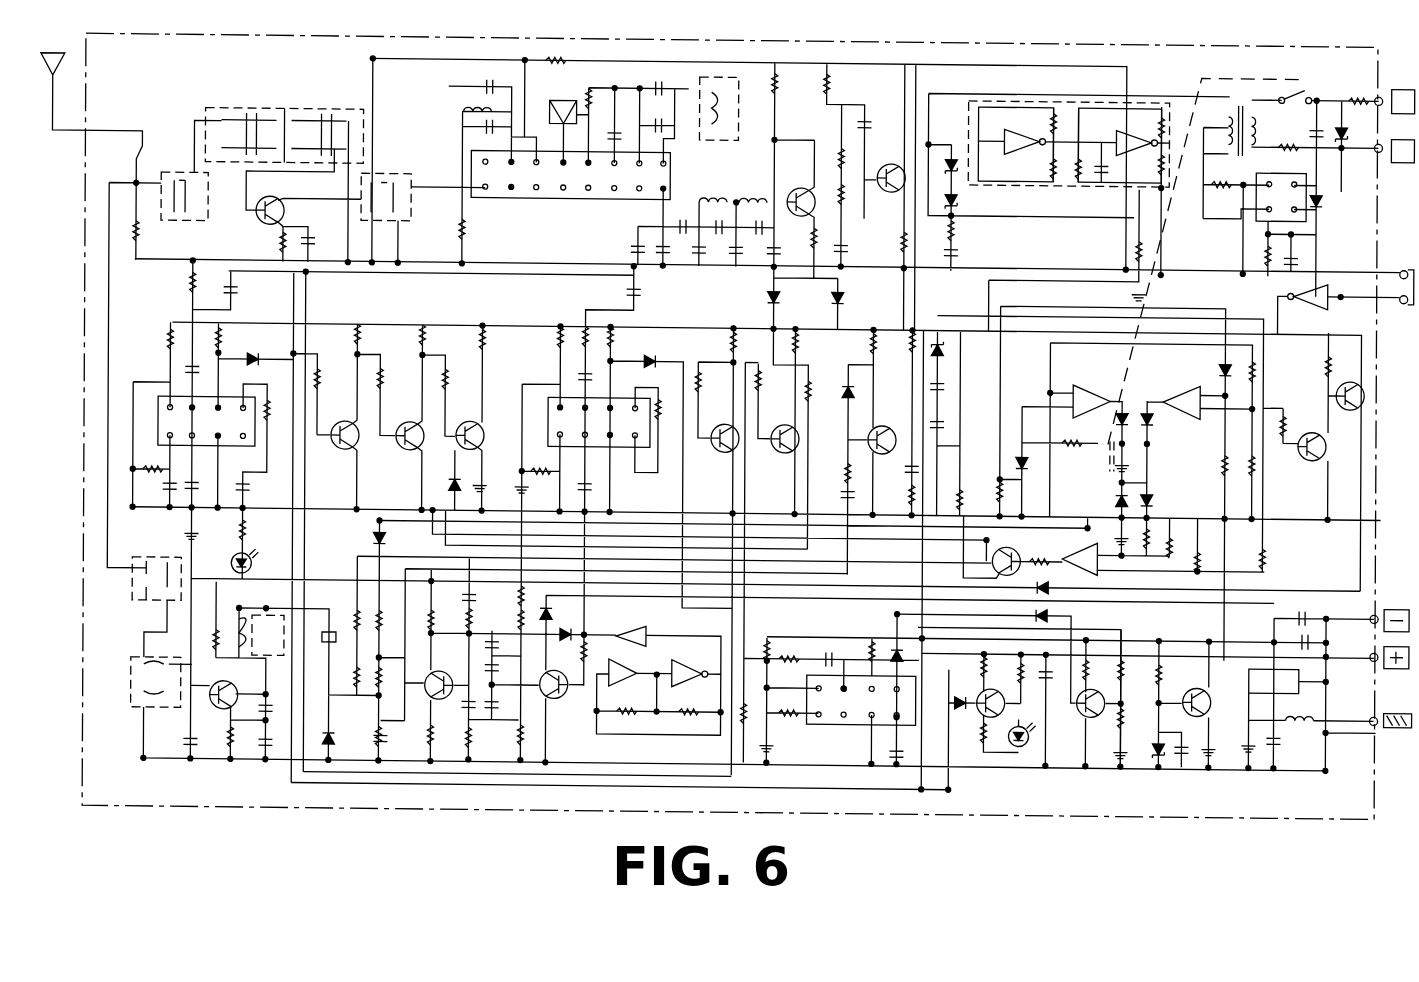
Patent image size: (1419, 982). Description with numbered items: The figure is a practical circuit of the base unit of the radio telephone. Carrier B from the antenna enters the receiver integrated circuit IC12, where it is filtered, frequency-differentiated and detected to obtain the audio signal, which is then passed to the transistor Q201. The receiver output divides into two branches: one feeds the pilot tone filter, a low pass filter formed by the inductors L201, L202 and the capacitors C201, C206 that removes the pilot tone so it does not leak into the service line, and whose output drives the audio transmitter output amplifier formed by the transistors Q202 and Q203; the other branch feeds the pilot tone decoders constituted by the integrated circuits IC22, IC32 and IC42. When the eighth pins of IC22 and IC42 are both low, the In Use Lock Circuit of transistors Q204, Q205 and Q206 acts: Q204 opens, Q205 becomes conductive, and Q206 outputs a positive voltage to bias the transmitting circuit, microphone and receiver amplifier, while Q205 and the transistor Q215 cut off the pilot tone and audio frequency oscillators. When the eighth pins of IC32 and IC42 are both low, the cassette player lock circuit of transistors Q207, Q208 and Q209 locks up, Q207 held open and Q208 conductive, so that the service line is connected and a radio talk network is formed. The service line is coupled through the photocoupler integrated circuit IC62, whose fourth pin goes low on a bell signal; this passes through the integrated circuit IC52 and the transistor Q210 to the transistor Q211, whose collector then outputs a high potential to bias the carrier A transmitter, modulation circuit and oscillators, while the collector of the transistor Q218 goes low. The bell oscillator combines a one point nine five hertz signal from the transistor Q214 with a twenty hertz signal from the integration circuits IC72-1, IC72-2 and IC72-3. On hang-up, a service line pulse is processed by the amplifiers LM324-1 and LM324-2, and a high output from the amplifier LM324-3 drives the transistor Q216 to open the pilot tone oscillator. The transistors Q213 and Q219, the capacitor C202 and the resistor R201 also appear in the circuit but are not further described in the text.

The transistor Q201 is at (296, 210).
The transistor Q202 is at (801, 194).
The transistor Q203 is at (890, 169).
The transistor Q204 is at (343, 424).
The transistor Q205 is at (408, 425).
The transistor Q206 is at (494, 432).
The transistor Q207 is at (713, 452).
The transistor Q208 is at (773, 453).
The transistor Q209 is at (896, 428).
The transistor Q210 is at (1312, 437).
The transistor Q211 is at (1350, 389).
The transistor Q213 is at (230, 686).
The transistor Q214 is at (450, 673).
The transistor Q215 is at (566, 704).
The transistor Q216 is at (1027, 553).
The transistor Q218 is at (1101, 718).
The transistor Q219 is at (1094, 694).
The integrated circuit IC12 is at (570, 174).
The integrated circuit IC22 is at (206, 421).
The integrated circuit IC32 is at (599, 422).
The integrated circuit IC42 is at (861, 700).
The integrated circuit IC52 is at (1303, 305).
The photocoupler integrated circuit IC62 is at (1304, 204).
The integration circuit IC72-1 is at (662, 631).
The integration circuit IC72-2 is at (622, 683).
The integration circuit IC72-3 is at (689, 684).
The amplifier LM324-1 is at (1086, 391).
The amplifier LM324-2 is at (1165, 393).
The amplifier LM324-3 is at (1060, 568).
The inductor L201 is at (711, 189).
The inductor L202 is at (756, 189).
The capacitor C201 is at (1180, 752).
The capacitor C202 is at (720, 221).
The capacitor C206 is at (792, 255).
The resistor R201 is at (1128, 722).